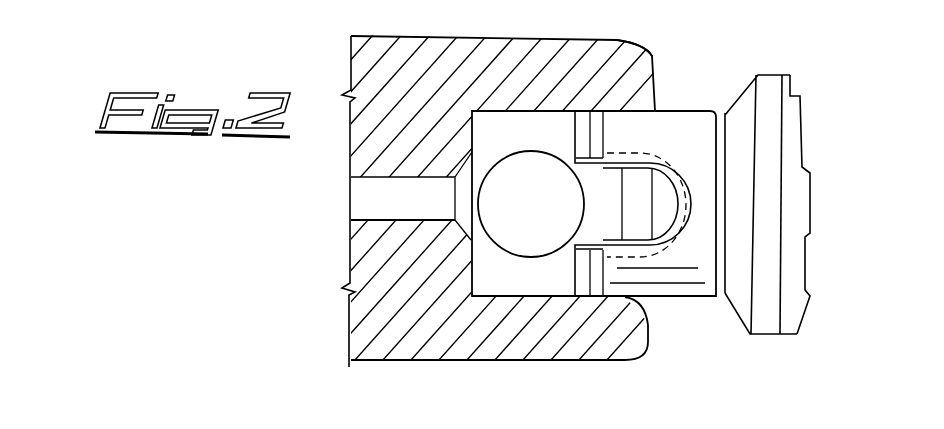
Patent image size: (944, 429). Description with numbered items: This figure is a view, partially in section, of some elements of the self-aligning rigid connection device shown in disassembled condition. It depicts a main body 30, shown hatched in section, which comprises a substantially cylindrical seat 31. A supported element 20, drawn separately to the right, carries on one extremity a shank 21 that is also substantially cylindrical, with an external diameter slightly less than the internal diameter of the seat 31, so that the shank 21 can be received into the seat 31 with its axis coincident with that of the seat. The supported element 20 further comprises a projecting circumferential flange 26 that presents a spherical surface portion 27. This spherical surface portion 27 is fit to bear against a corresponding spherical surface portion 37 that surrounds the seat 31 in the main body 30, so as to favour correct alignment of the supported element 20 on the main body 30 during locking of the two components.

The supported element 20 is at (803, 173).
The shank 21 is at (682, 125).
The projecting circumferential flange 26 is at (770, 338).
The spherical surface portion 27 is at (742, 90).
The main body 30 is at (431, 342).
The cylindrical seat 31 is at (482, 262).
The spherical surface portion 37 is at (653, 93).